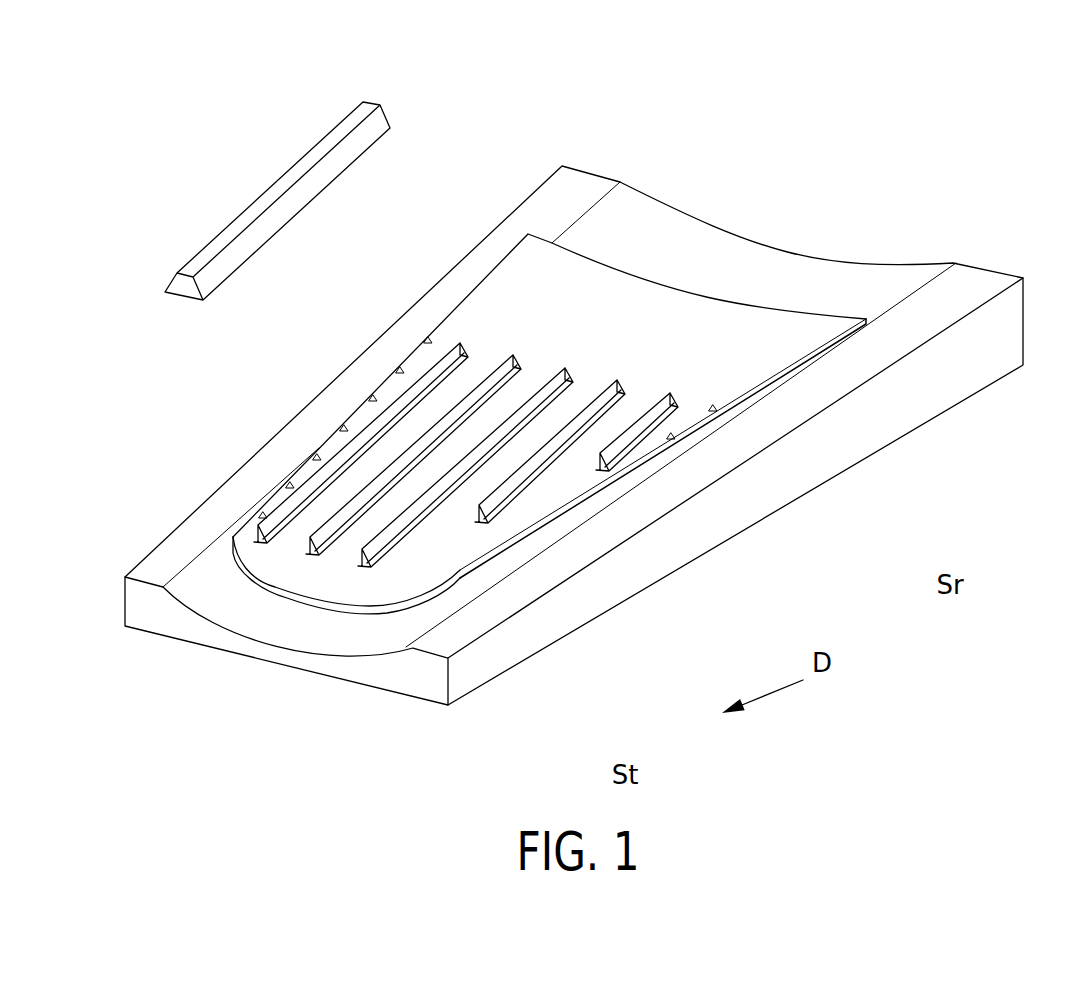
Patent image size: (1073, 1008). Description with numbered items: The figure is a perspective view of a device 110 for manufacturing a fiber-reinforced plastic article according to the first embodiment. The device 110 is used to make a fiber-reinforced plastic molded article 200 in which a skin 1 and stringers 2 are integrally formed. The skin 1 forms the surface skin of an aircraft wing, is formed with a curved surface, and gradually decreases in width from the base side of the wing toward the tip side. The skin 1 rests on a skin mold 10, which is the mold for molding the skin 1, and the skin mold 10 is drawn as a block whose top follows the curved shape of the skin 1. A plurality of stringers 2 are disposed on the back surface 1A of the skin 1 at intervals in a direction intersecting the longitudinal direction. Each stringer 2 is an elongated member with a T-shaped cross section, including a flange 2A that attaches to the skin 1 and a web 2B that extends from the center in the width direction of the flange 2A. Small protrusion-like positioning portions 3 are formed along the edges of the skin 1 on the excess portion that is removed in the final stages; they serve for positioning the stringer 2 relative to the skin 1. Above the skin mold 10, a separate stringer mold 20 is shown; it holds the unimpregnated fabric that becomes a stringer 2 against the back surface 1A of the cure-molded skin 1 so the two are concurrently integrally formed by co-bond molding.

The skin 1 is at (753, 302).
The back surface 1A is at (697, 419).
The stringer 2 is at (327, 434).
The flange 2A is at (492, 522).
The web 2B is at (527, 473).
The positioning portion 3 is at (422, 336).
The skin mold 10 is at (957, 430).
The stringer mold 20 is at (291, 126).
The device for manufacturing 110 is at (1009, 240).
The fiber-reinforced plastic molded article 200 is at (288, 628).